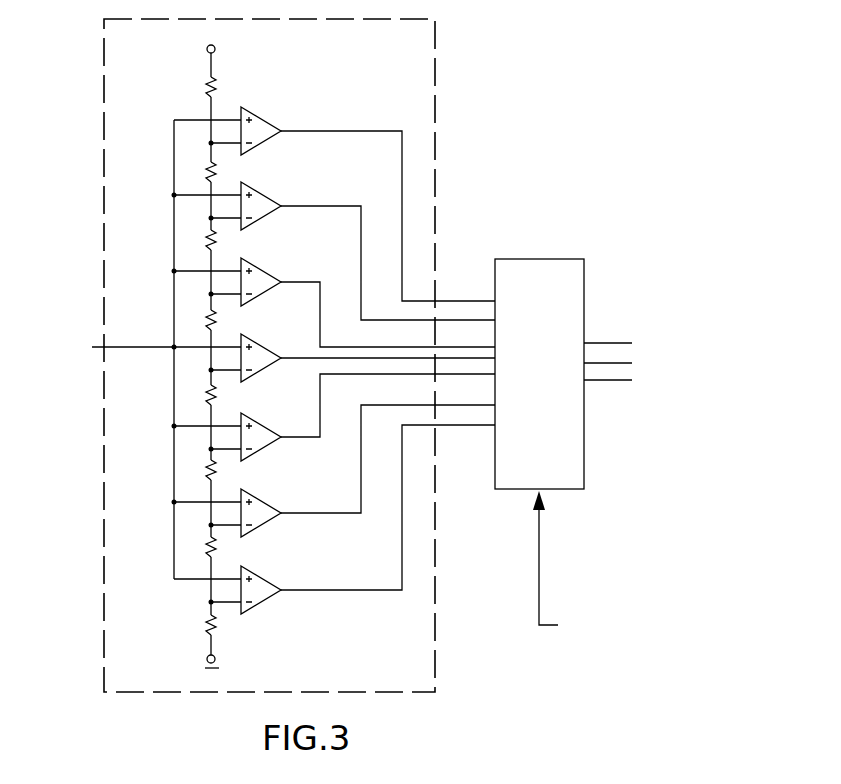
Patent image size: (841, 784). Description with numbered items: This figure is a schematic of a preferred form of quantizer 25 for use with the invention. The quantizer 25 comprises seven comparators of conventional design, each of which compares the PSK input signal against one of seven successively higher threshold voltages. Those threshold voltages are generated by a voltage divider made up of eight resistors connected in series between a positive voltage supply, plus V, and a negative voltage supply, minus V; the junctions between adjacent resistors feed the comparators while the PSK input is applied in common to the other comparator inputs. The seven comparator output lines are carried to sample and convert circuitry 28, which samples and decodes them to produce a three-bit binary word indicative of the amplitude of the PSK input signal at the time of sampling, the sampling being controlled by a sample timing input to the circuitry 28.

The quantizer 25 is at (400, 55).
The sample and convert circuitry 28 is at (558, 259).